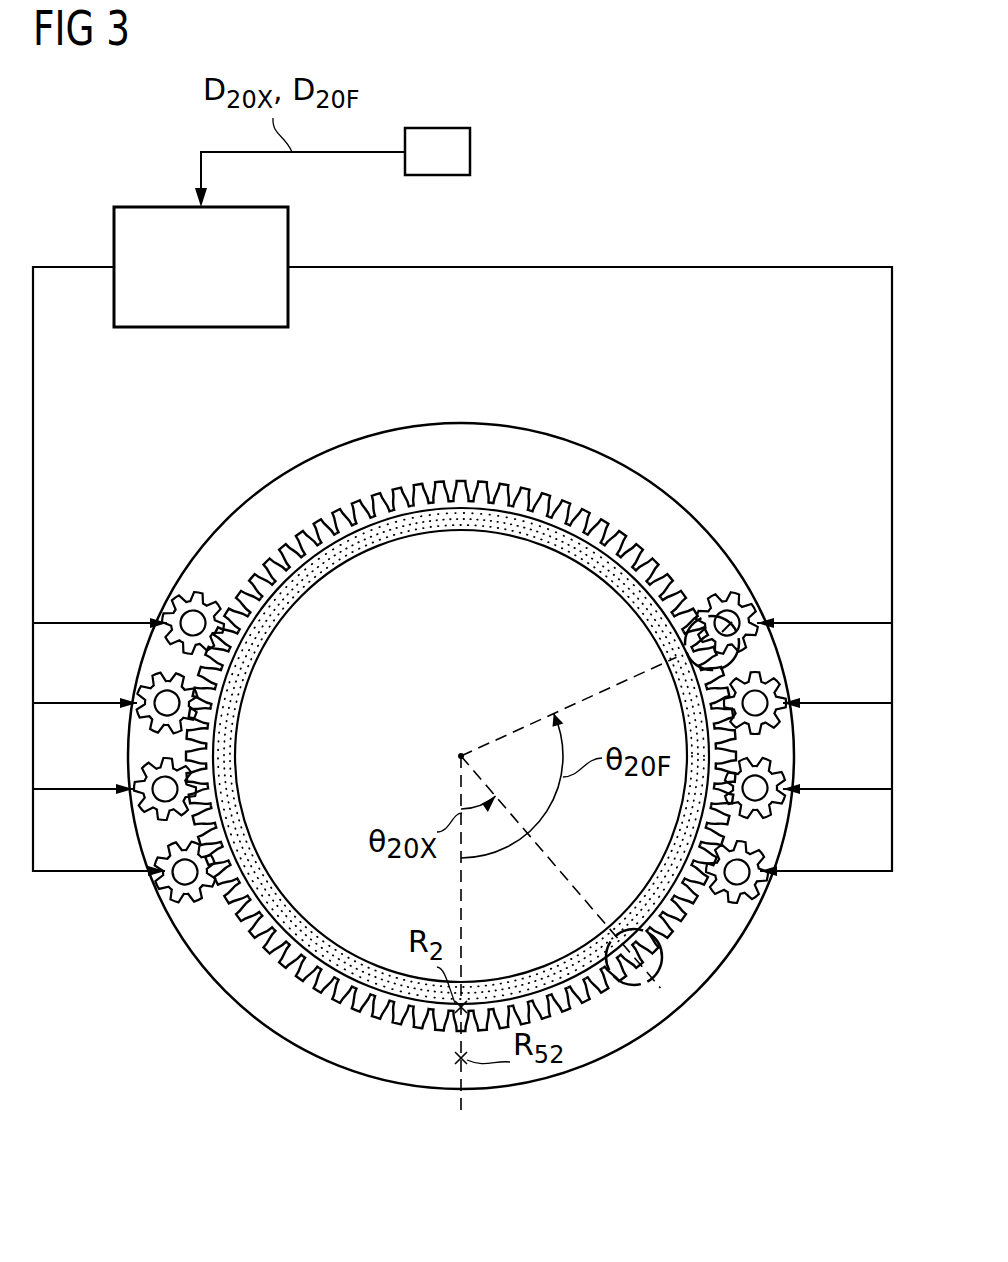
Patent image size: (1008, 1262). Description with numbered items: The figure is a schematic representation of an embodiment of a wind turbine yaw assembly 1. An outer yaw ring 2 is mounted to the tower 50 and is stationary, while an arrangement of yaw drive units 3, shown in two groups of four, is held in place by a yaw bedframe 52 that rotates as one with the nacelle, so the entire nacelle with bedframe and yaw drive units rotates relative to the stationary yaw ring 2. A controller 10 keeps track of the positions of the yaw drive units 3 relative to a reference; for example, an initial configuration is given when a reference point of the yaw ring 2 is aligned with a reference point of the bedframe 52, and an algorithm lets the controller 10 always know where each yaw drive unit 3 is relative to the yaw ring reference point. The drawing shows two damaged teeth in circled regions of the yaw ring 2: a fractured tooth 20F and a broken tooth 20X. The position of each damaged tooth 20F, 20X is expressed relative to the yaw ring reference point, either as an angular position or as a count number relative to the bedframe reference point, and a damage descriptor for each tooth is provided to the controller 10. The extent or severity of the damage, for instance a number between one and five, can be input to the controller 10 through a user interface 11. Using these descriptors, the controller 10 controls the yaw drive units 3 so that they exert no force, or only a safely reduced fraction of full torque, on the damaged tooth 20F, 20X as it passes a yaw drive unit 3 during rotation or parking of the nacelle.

The wind turbine yaw assembly 1 is at (725, 384).
The yaw ring 2 is at (473, 483).
The yaw drive units 3 is at (167, 597).
The controller 10 is at (140, 207).
The user interface 11 is at (438, 128).
The tower 50 is at (653, 887).
The yaw bedframe 52 is at (718, 963).
The fractured tooth 20F is at (667, 652).
The broken tooth 20X is at (650, 984).